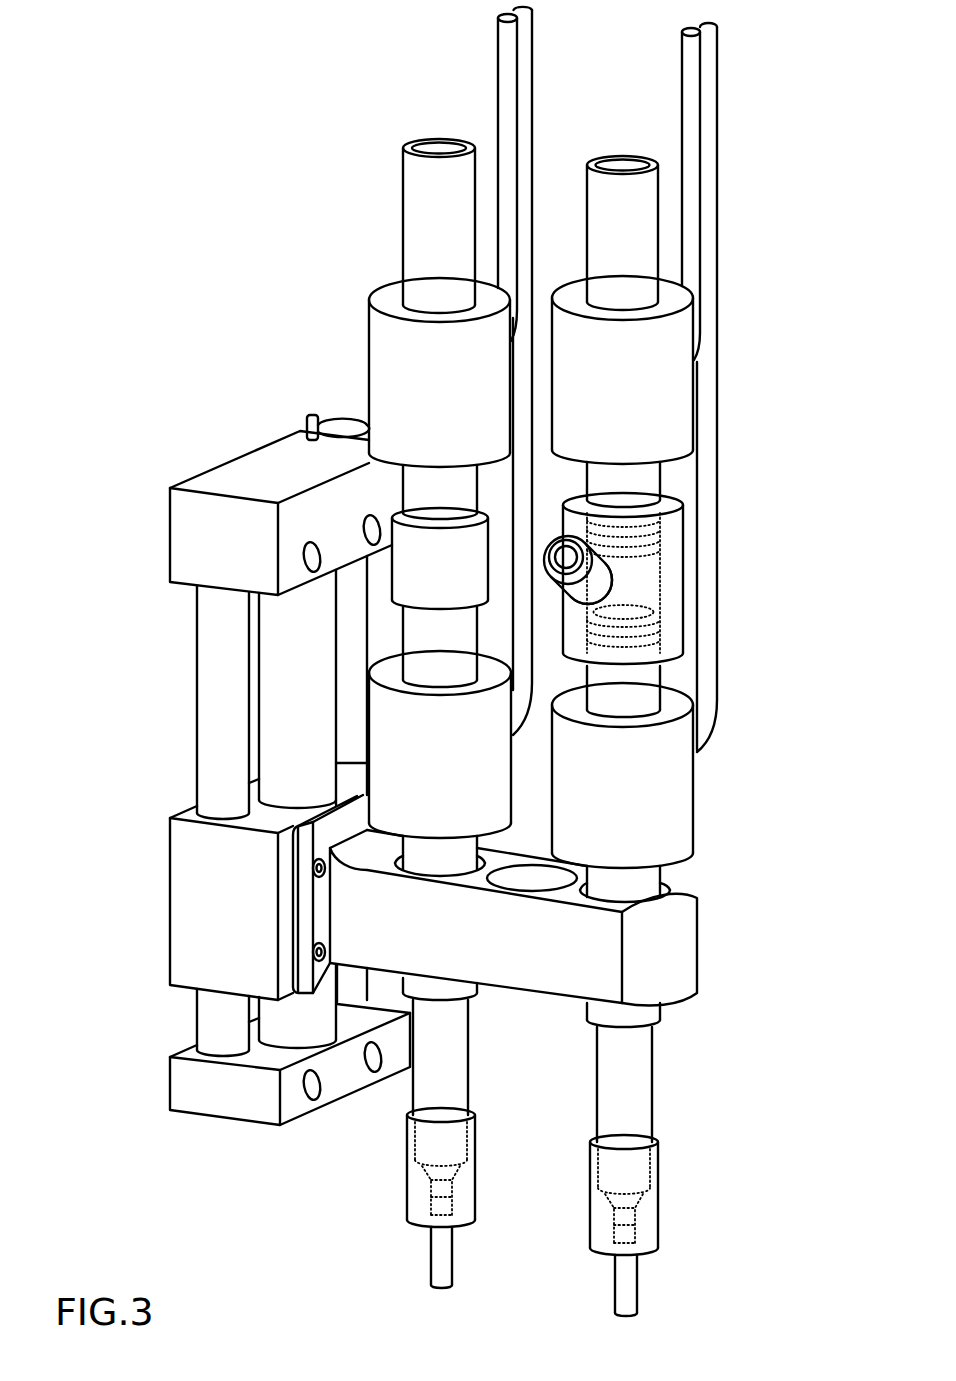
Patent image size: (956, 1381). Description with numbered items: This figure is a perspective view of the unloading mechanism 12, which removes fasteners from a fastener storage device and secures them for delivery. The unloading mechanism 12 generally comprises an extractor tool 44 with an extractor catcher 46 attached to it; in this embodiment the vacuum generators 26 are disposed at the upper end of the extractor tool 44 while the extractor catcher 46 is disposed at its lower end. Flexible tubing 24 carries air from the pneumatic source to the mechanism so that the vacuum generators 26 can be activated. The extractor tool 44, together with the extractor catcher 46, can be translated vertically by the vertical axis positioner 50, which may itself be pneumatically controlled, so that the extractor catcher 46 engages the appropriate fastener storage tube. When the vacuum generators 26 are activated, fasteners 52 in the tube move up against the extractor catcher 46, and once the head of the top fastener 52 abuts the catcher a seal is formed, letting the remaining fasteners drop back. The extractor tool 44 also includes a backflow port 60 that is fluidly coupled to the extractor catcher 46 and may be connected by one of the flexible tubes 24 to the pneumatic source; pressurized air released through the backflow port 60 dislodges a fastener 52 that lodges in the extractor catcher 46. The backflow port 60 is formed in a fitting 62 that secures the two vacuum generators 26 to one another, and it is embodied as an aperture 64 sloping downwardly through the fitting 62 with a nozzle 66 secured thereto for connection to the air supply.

The unloading mechanism 12 is at (146, 296).
The flexible tubing 24 is at (498, 58).
The vacuum generators 26 is at (378, 348).
The extractor tool 44 is at (465, 124).
The extractor catcher 46 is at (598, 1192).
The vertical axis positioner 50 is at (143, 942).
The fasteners 52 is at (628, 1287).
The backflow port 60 is at (628, 577).
The fitting 62 is at (670, 600).
The aperture 64 is at (553, 548).
The nozzle 66 is at (578, 595).